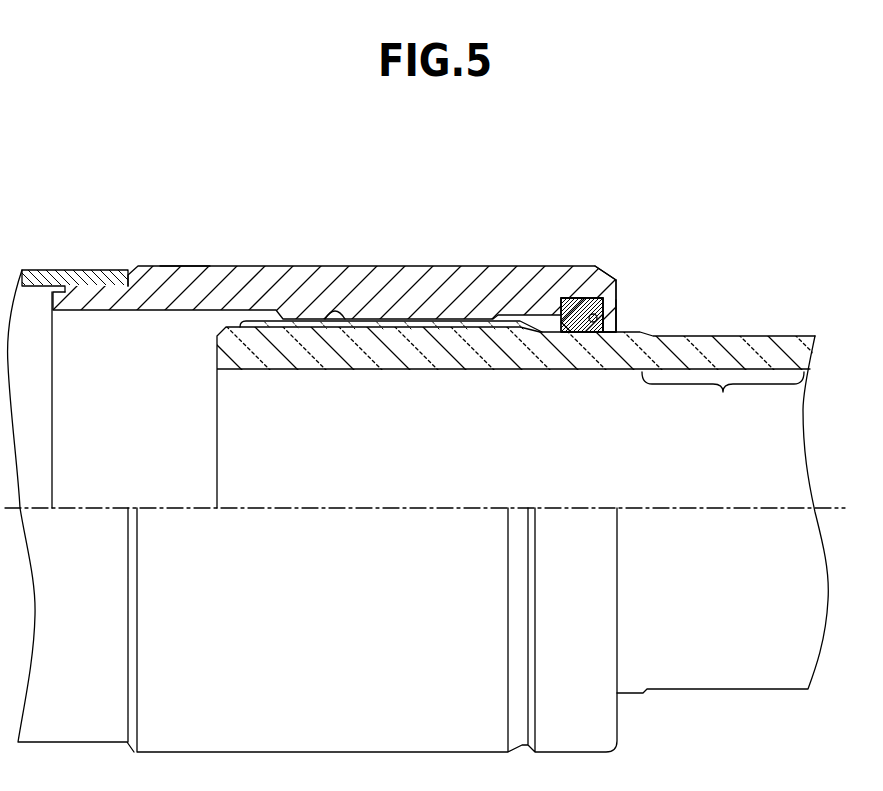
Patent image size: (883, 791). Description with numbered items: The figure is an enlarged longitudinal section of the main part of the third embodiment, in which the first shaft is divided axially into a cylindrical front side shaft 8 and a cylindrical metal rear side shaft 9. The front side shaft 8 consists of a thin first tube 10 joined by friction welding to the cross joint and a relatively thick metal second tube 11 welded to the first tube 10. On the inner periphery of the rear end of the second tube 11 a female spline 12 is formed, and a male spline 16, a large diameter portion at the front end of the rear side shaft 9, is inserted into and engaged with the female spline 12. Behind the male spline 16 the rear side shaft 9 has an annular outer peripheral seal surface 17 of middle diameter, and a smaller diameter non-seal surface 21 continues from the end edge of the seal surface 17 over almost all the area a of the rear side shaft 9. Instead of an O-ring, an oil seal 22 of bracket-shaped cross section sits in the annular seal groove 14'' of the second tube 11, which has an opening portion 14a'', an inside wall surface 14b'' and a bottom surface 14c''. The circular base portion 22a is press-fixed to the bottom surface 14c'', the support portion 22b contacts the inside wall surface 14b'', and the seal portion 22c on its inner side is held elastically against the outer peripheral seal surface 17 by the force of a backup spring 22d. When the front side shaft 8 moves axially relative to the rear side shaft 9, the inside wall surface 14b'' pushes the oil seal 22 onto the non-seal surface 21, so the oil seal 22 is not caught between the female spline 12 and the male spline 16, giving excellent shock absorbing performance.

The front side shaft 8 is at (183, 258).
The rear side shaft 9 is at (783, 329).
The first tube 10 is at (69, 268).
The second tube 11 is at (280, 277).
The female spline 12 is at (395, 326).
The annular seal groove 14'' is at (660, 294).
The opening portion 14a'' is at (669, 315).
The inside wall surface 14b'' is at (558, 249).
The bottom surface 14c'' is at (654, 251).
The male spline 16 is at (347, 313).
The outer peripheral seal surface 17 is at (576, 332).
The non-seal surface 21 is at (738, 331).
The oil seal 22 is at (584, 296).
The base portion 22a is at (577, 297).
The support portion 22b is at (566, 329).
The seal portion 22c is at (592, 326).
The backup spring 22d is at (601, 330).
The area of the rear side shaft a is at (723, 395).